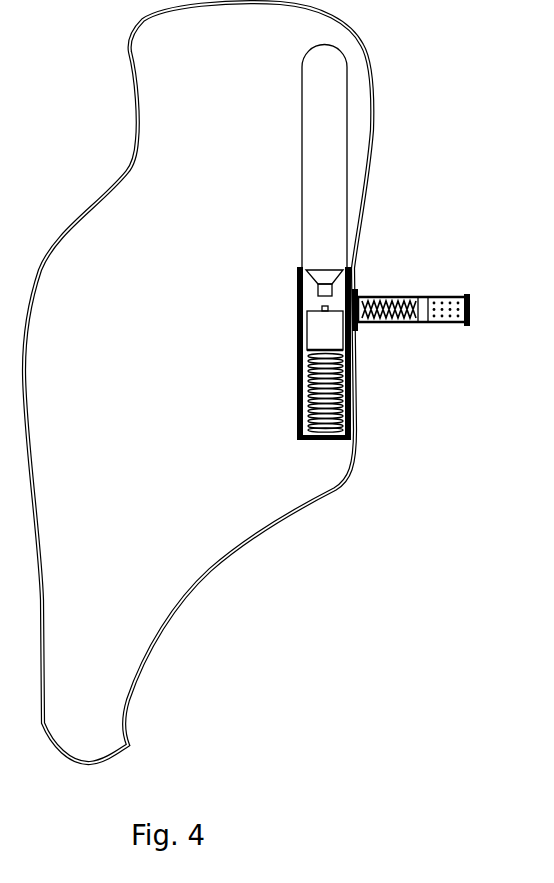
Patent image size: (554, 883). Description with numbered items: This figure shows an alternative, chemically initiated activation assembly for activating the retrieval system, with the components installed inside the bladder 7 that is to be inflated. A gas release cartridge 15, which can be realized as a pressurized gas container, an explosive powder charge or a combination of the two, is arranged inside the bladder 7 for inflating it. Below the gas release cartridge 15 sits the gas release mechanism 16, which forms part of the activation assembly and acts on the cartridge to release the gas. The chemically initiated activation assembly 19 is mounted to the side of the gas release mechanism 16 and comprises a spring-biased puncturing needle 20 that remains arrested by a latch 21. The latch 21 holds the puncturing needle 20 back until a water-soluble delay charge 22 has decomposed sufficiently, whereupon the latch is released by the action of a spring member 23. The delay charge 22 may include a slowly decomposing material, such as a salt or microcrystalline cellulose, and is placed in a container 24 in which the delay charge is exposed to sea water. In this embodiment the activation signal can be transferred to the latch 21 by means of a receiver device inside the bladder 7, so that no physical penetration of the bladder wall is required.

The bladder 7 is at (121, 172).
The gas release cartridge 15 is at (300, 152).
The gas release mechanism 16 is at (262, 402).
The chemically initiated activation assembly 19 is at (460, 280).
The spring-biased puncturing needle 20 is at (317, 330).
The latch 21 is at (350, 300).
The water-soluble delay charge 22 is at (470, 312).
The spring member 23 is at (420, 323).
The container 24 is at (447, 323).